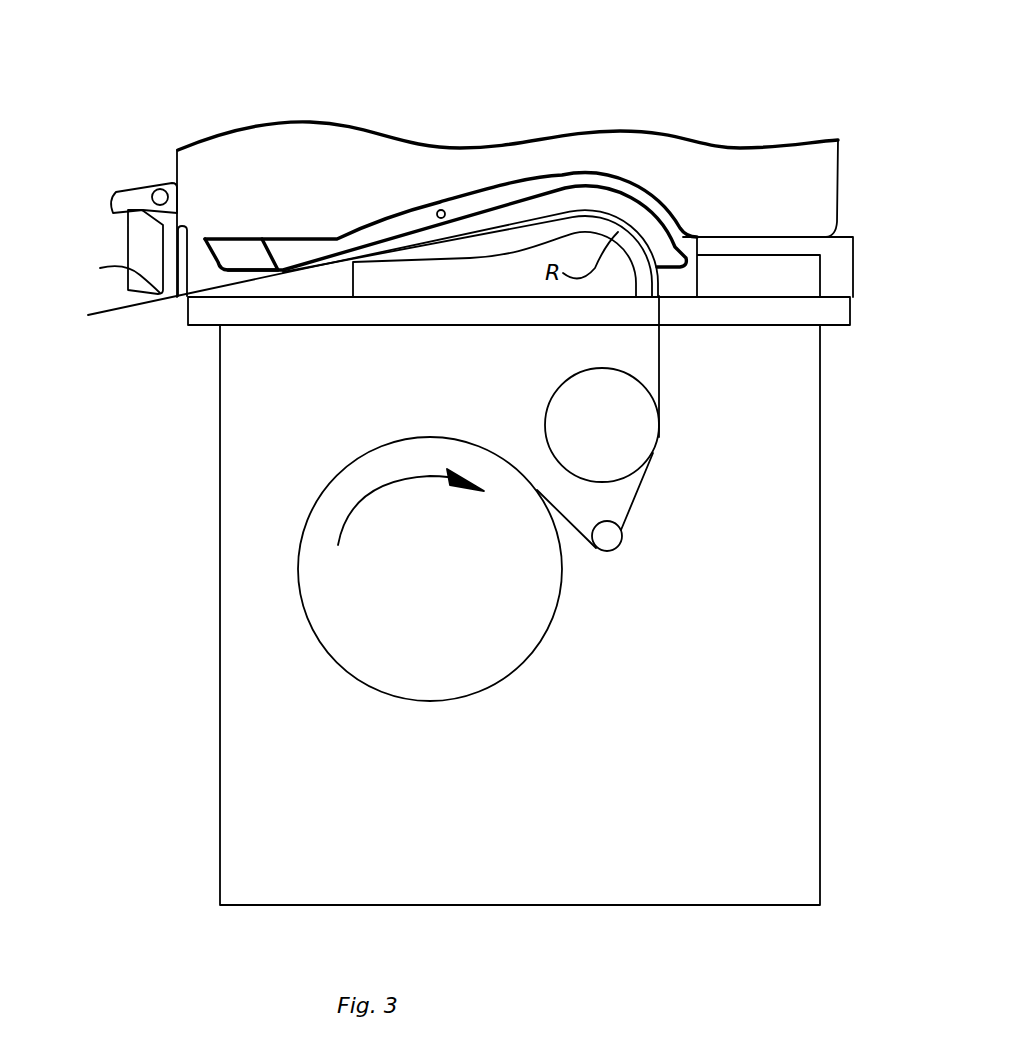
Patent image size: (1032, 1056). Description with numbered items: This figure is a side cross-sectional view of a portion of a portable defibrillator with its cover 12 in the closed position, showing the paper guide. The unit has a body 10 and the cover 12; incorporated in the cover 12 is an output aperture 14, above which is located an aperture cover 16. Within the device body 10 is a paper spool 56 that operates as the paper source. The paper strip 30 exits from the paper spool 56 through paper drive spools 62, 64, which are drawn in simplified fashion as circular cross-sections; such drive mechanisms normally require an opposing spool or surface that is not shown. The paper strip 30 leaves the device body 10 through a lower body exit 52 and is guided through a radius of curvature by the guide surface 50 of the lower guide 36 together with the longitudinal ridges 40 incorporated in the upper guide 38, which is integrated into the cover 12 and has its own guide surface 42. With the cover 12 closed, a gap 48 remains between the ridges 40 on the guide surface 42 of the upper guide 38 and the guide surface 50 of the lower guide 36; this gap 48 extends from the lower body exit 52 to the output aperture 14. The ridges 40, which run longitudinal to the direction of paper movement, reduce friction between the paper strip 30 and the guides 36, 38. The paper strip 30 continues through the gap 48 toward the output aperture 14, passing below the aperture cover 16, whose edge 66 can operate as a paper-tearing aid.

The body 10 is at (806, 436).
The cover 12 is at (820, 160).
The aperture 14 is at (165, 297).
The aperture cover 16 is at (120, 203).
The paper strip 30 is at (88, 316).
The lower guide 36 is at (410, 282).
The upper guide 38 is at (398, 212).
The ridges 40 is at (530, 198).
The guide surface 42 is at (444, 210).
The gap 48 is at (613, 202).
The guide surface 50 is at (495, 226).
The lower body exit 52 is at (665, 298).
The paper spool 56 is at (298, 583).
The paper drive spool 62 is at (642, 430).
The paper drive spool 64 is at (610, 545).
The edge 66 is at (100, 268).